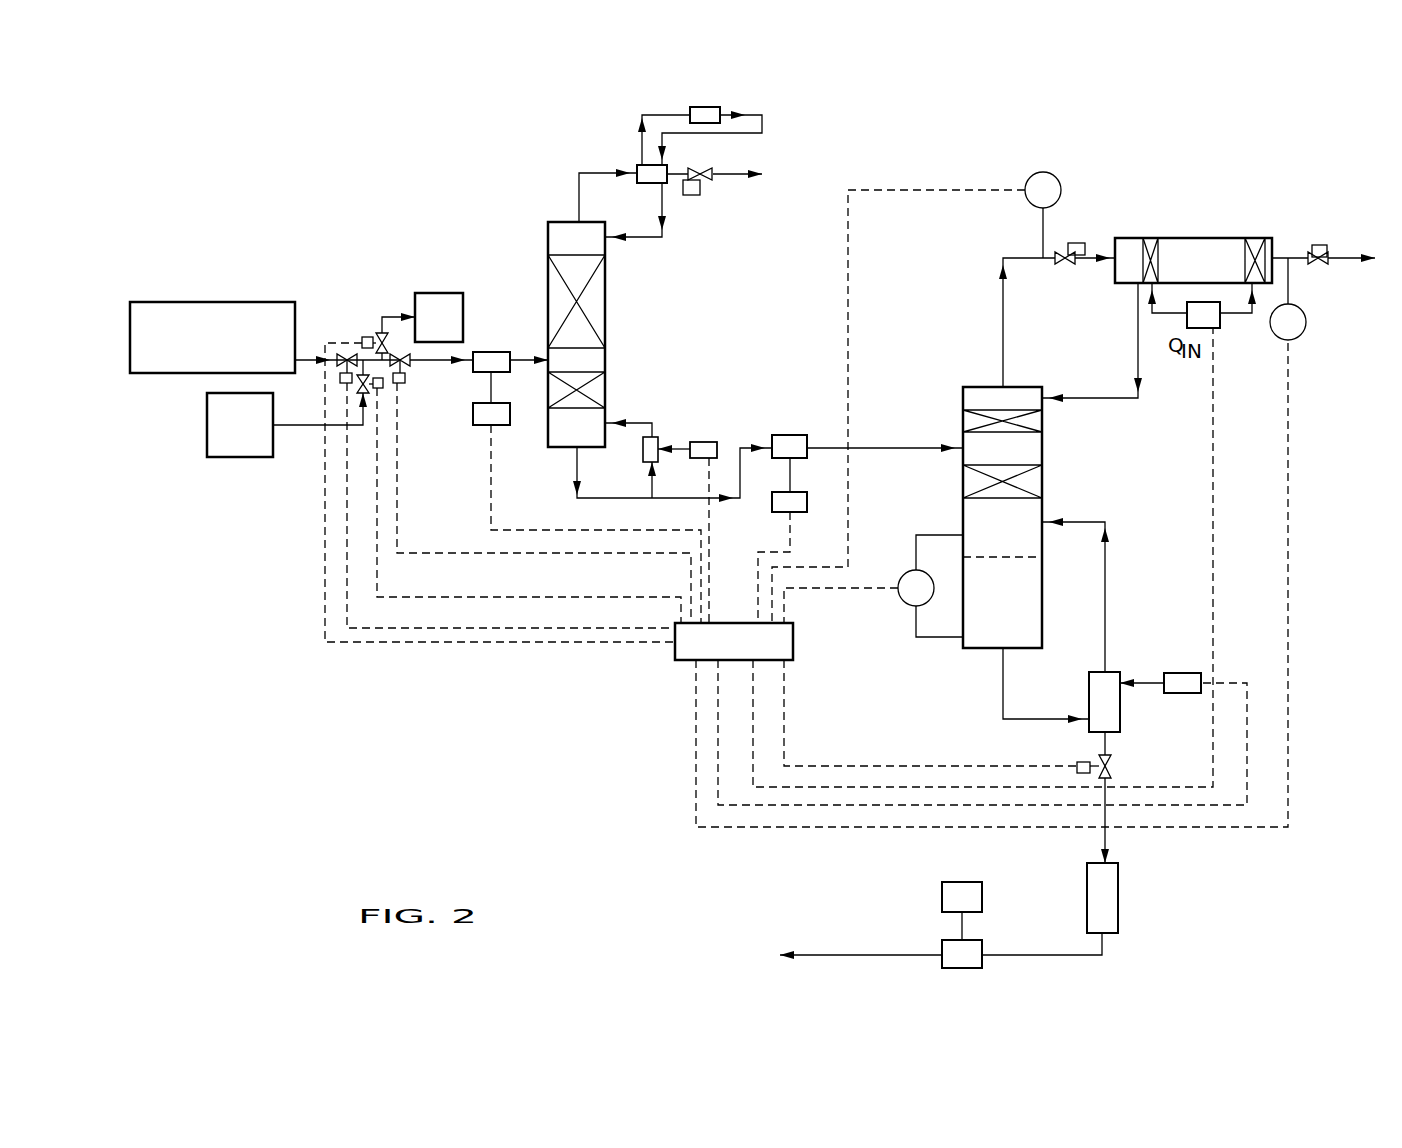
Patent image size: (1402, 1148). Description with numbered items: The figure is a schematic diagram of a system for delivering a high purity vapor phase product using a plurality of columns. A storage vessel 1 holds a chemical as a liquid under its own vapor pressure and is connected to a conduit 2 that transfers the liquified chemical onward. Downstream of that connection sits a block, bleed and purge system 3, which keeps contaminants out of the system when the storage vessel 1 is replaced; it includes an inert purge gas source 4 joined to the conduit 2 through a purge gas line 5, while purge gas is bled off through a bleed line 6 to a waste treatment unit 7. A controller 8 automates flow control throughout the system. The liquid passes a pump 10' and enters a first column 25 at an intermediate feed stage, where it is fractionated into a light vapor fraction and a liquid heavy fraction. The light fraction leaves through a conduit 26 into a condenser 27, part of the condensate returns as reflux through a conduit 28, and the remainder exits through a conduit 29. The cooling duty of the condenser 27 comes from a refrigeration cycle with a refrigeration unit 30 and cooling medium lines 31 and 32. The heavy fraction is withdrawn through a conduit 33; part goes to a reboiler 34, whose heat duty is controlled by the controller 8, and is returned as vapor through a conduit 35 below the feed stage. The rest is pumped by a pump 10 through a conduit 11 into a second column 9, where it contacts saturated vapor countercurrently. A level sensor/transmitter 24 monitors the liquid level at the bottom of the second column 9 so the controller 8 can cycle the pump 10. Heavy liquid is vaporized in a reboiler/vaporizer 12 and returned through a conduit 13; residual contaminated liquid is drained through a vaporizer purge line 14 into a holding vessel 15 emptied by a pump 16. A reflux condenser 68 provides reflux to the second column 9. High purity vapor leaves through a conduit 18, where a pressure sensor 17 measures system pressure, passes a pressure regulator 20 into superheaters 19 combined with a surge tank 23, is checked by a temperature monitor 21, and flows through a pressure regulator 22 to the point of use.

The storage vessel 1 is at (204, 348).
The conduit 2 is at (315, 359).
The block, bleed and purge system 3 is at (366, 334).
The inert purge gas source 4 is at (233, 436).
The purge gas line 5 is at (299, 425).
The bleed line 6 is at (391, 314).
The waste treatment unit 7 is at (431, 328).
The controller 8 is at (726, 653).
The second column 9 is at (1042, 432).
The pump 10 is at (789, 452).
The pump 10' is at (491, 367).
The conduit 11 is at (888, 440).
The reboiler/vaporizer 12 is at (1120, 707).
The conduit 13 is at (1105, 565).
The vaporizer purge line 14 is at (1104, 747).
The holding vessel 15 is at (1118, 895).
The pump 16 is at (940, 940).
The pressure sensor 17 is at (1043, 172).
The conduit 18 is at (1000, 318).
The superheaters 19 is at (1152, 238).
The pressure regulator 20 is at (1073, 240).
The temperature monitor 21 is at (1306, 322).
The pressure regulator 22 is at (1318, 247).
The surge tank 23 is at (1198, 238).
The level sensor/transmitter 24 is at (900, 598).
The first column 25 is at (605, 318).
The conduit 26 is at (579, 194).
The condenser 27 is at (642, 183).
The conduit 28 is at (649, 239).
The conduit 29 is at (723, 183).
The refrigeration unit 30 is at (690, 105).
The line 31 is at (762, 125).
The line 32 is at (642, 138).
The conduit 33 is at (560, 468).
The reboiler 34 is at (658, 437).
The conduit 35 is at (639, 416).
The reflux condenser 68 is at (1122, 238).